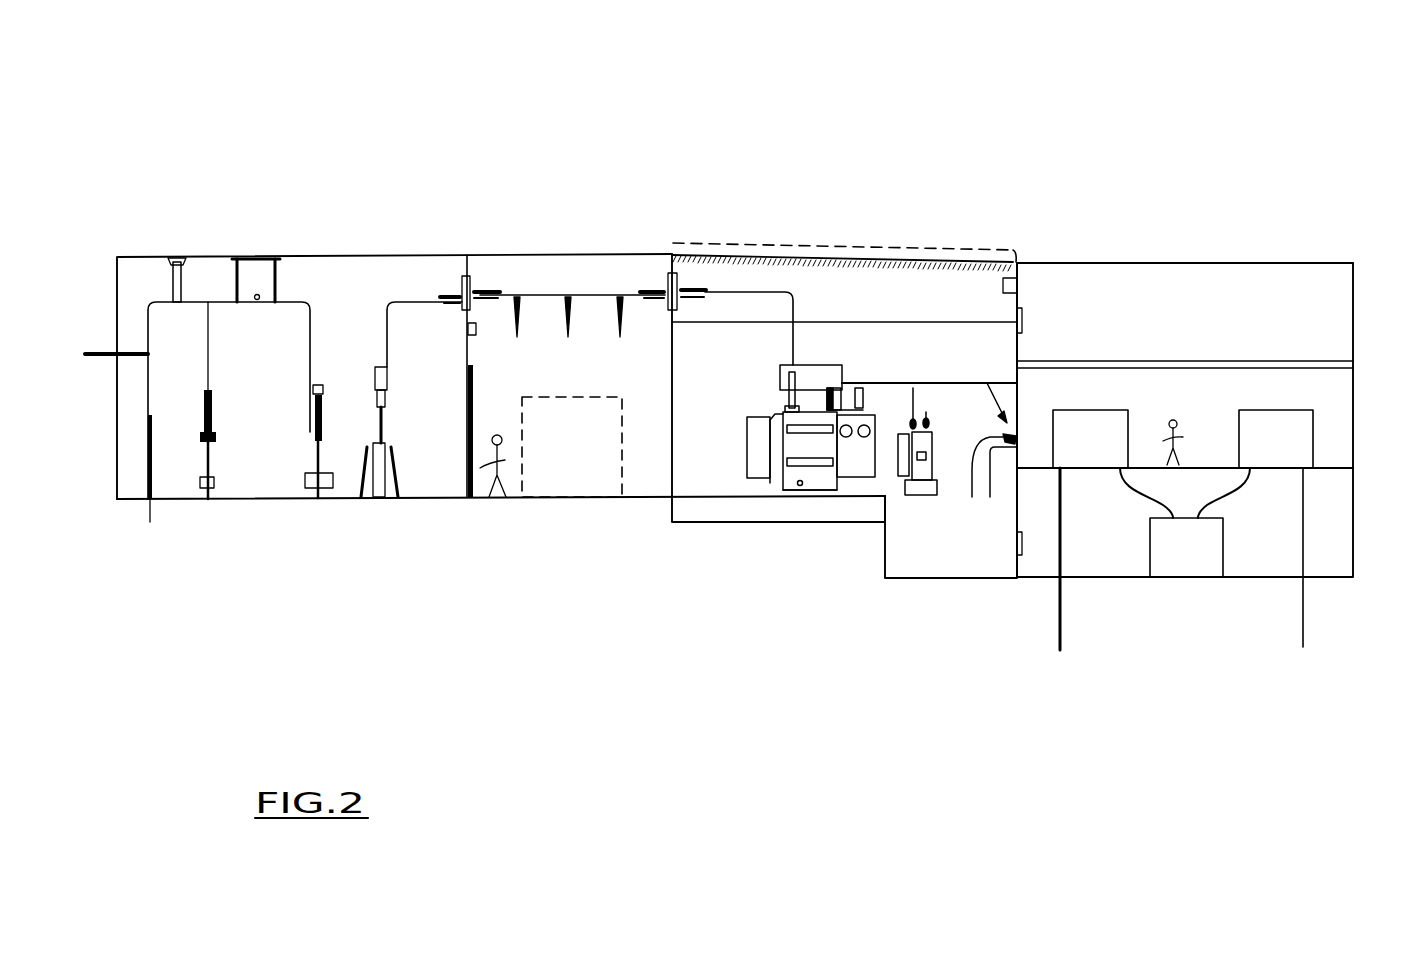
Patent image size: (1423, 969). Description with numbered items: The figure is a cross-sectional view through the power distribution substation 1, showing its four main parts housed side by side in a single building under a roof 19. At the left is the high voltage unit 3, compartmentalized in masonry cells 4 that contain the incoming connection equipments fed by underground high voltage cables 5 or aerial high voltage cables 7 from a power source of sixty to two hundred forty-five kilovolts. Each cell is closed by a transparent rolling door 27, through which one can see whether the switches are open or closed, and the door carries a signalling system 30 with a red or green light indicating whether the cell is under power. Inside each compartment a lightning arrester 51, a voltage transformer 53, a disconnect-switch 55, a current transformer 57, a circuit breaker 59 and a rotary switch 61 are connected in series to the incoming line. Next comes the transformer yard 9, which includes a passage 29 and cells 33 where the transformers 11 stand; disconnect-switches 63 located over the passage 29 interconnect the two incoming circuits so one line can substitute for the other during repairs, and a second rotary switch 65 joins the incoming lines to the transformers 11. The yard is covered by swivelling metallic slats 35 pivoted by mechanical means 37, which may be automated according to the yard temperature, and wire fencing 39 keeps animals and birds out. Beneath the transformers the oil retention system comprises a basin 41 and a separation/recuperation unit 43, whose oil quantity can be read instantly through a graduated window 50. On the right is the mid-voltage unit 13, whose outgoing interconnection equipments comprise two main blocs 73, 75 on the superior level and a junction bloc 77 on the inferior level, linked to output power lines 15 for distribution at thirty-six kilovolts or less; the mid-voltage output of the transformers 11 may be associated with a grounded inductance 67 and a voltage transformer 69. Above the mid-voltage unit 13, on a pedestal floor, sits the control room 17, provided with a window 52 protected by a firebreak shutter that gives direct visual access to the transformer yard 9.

The power distribution substation 1 is at (1105, 82).
The high voltage unit 3 is at (348, 283).
The cells 4 is at (430, 472).
The underground high voltage cables 5 is at (150, 522).
The aerial high voltage cables 7 is at (100, 360).
The transformer yard 9 is at (838, 288).
The transformers 11 is at (810, 450).
The mid-voltage unit 13 is at (1336, 386).
The output power lines 15 is at (1305, 512).
The control room 17 is at (1272, 278).
The roof 19 is at (1158, 263).
The transparent rolling door 27 is at (473, 478).
The passage 29 is at (515, 470).
The signalling system 30 is at (475, 330).
The cells 33 is at (708, 480).
The swivelling metallic slats 35 is at (968, 278).
The mechanical means 37 is at (1022, 280).
The wire fencing 39 is at (810, 243).
The basin 41 is at (853, 508).
The separation/recuperation unit 43 is at (897, 570).
The window 50 is at (1023, 546).
The lightning arrester 51 is at (205, 268).
The window 52 is at (1020, 318).
The voltage transformer 53 is at (212, 421).
The disconnect-switch 55 is at (252, 268).
The current transformer 57 is at (317, 442).
The circuit breaker 59 is at (381, 387).
The rotary switch 61 is at (493, 295).
The disconnect-switches 63 is at (588, 295).
The second rotary switch 65 is at (702, 275).
The grounded inductance 67 is at (925, 468).
The voltage transformer 69 is at (972, 500).
The main bloc 73 is at (1100, 440).
The main bloc 75 is at (1297, 440).
The junction bloc 77 is at (1223, 553).